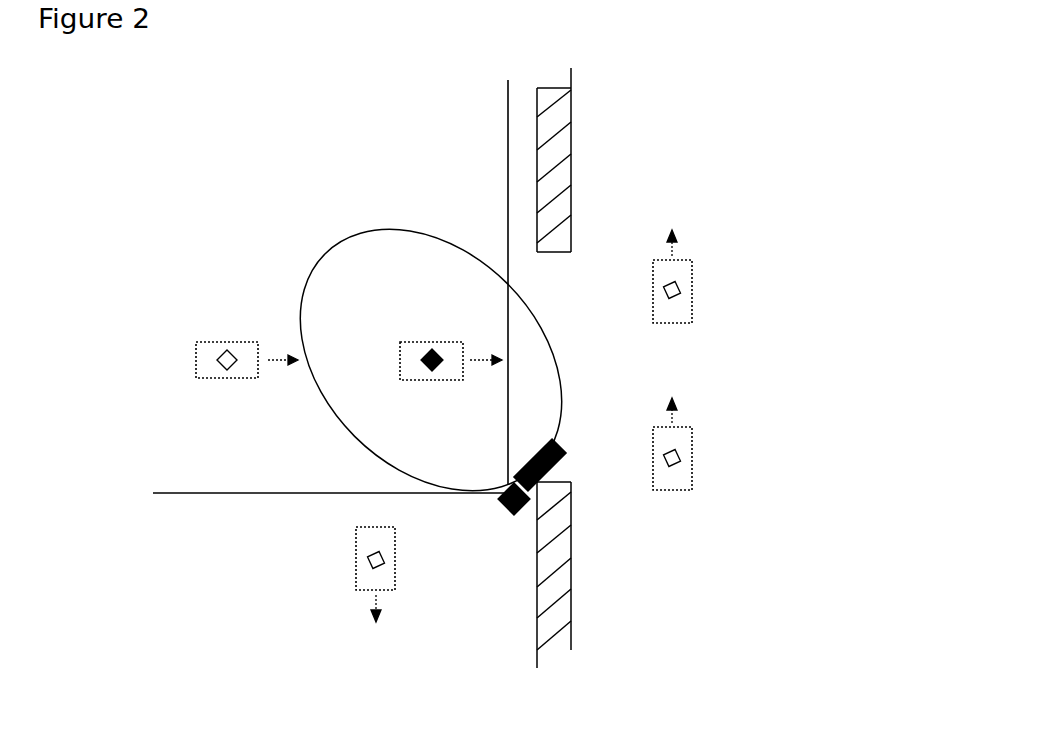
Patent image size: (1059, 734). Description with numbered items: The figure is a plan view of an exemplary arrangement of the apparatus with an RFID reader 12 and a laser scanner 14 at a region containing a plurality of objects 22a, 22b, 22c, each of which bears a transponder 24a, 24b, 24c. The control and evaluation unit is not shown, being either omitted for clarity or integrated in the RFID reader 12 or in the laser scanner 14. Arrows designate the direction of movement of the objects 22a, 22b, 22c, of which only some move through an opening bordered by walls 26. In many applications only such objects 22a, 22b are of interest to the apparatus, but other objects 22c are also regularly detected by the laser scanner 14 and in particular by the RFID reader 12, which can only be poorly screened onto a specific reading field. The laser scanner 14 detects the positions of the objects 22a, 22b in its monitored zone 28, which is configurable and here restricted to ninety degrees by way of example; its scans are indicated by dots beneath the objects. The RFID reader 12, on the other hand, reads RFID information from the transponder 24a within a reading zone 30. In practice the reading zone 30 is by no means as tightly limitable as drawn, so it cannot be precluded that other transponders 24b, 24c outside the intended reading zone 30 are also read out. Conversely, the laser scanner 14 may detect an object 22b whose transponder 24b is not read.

The RFID reader 12 is at (560, 455).
The laser scanner 14 is at (510, 507).
The object 22a is at (423, 341).
The object 22b is at (210, 342).
The object 22c is at (692, 263).
The transponder 24a is at (428, 369).
The transponder 24b is at (225, 363).
The transponder 24c is at (676, 296).
The walls 26 is at (562, 130).
The monitored zone 28 is at (218, 494).
The reading zone 30 is at (401, 230).